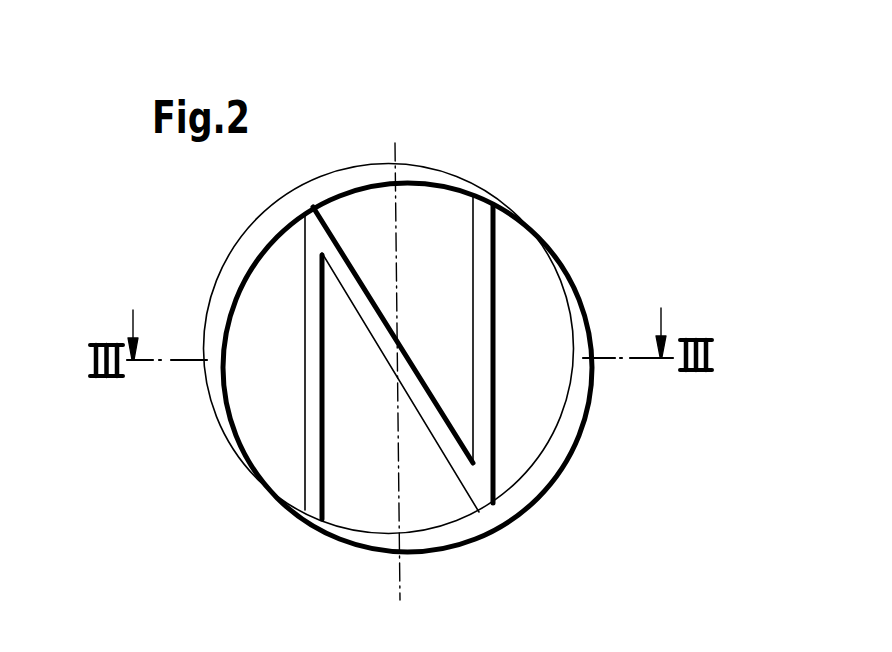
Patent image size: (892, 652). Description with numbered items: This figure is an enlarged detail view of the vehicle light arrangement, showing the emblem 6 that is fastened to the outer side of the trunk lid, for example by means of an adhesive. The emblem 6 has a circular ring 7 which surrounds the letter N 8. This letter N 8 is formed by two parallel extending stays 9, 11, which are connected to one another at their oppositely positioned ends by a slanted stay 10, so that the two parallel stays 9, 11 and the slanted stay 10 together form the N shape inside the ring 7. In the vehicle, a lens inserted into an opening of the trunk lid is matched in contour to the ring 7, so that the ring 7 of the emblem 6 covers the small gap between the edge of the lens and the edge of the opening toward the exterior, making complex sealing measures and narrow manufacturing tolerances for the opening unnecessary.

The emblem 6 is at (452, 171).
The circular ring 7 is at (520, 230).
The letter N 8 is at (484, 412).
The stay 9 is at (305, 423).
The slanted stay 10 is at (435, 430).
The stay 11 is at (478, 305).